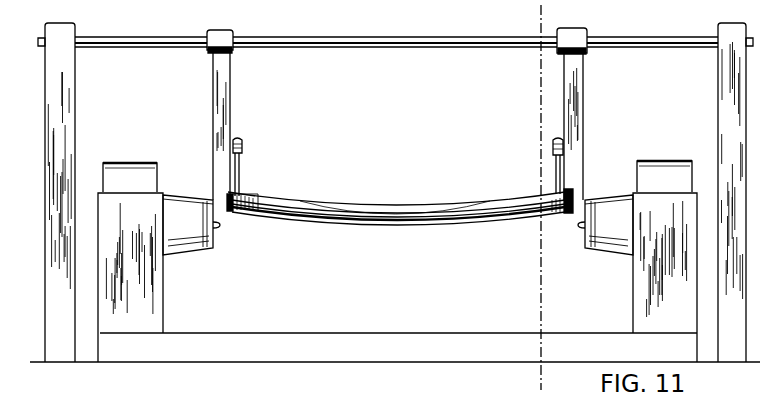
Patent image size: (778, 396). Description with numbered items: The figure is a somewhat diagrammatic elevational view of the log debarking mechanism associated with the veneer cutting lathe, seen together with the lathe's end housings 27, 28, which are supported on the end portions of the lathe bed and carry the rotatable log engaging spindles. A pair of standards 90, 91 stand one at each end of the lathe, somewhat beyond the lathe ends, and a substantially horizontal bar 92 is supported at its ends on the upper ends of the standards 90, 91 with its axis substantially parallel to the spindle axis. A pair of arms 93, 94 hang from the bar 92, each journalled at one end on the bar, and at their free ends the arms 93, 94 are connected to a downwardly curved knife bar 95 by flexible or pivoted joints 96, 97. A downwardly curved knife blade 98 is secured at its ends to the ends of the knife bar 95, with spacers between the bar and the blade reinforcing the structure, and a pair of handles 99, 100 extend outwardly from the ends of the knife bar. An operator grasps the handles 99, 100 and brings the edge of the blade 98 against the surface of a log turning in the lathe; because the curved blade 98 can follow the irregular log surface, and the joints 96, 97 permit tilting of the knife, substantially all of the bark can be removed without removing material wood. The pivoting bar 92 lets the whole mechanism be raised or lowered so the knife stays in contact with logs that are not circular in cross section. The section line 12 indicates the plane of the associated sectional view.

The section line 12- 12 is at (552, 17).
The end housing 27 is at (110, 251).
The end housing 28 is at (640, 296).
The standard 90 is at (52, 78).
The standard 91 is at (720, 112).
The horizontal bar 92 is at (659, 38).
The arm 93 is at (215, 97).
The arm 94 is at (583, 97).
The knife bar 95 is at (309, 216).
The flexible or pivoted joint 96 is at (222, 200).
The flexible or pivoted joint 97 is at (577, 200).
The knife blade 98 is at (363, 222).
The handle 99 is at (241, 168).
The handle 100 is at (553, 148).